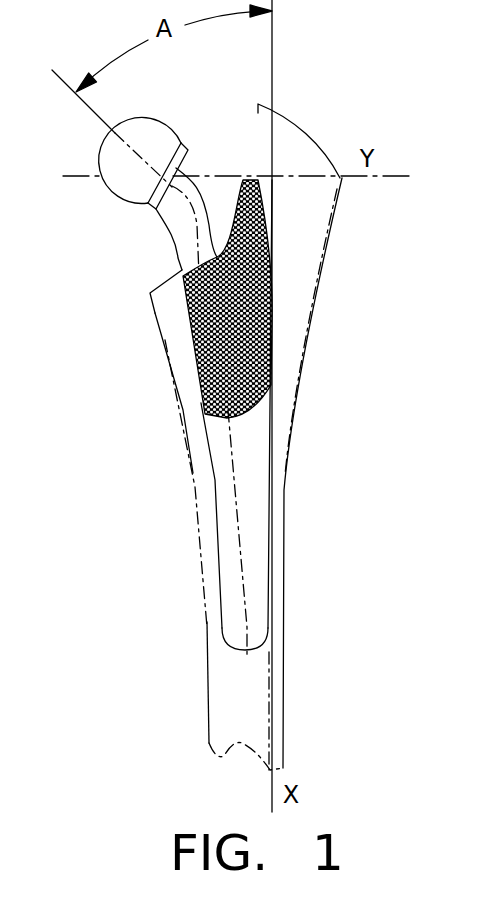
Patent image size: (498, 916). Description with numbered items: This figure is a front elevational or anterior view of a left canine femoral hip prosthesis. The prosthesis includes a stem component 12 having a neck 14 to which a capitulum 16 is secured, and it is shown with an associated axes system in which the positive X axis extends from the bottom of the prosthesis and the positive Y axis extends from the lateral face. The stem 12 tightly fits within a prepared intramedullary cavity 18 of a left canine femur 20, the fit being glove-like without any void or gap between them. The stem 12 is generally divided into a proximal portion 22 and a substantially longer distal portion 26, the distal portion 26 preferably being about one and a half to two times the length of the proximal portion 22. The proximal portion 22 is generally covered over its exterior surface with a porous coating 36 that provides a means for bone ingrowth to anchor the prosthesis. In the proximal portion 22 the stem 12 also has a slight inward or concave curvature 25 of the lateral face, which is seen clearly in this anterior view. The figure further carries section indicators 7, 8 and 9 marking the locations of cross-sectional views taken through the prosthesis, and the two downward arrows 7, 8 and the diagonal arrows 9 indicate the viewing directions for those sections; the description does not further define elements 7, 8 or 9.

The section line 7- 7 is at (367, 628).
The section line 8- 8 is at (366, 362).
The section line 9- 9 is at (120, 297).
The stem component 12 is at (284, 530).
The neck 14 is at (160, 206).
The capitulum 16 is at (100, 160).
The intramedullary cavity 18 is at (268, 596).
The left canine femur 20 is at (306, 136).
The proximal portion 22 is at (277, 185).
The concave curvature 25 is at (264, 235).
The distal portion 26 is at (185, 427).
The porous coating 36 is at (183, 321).